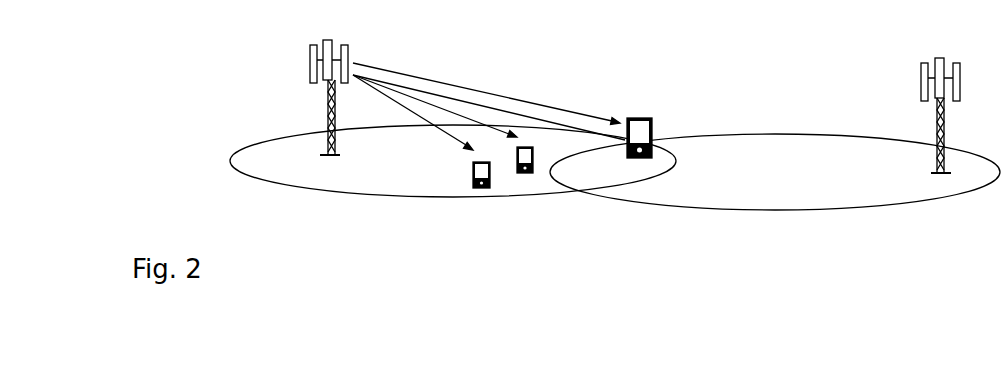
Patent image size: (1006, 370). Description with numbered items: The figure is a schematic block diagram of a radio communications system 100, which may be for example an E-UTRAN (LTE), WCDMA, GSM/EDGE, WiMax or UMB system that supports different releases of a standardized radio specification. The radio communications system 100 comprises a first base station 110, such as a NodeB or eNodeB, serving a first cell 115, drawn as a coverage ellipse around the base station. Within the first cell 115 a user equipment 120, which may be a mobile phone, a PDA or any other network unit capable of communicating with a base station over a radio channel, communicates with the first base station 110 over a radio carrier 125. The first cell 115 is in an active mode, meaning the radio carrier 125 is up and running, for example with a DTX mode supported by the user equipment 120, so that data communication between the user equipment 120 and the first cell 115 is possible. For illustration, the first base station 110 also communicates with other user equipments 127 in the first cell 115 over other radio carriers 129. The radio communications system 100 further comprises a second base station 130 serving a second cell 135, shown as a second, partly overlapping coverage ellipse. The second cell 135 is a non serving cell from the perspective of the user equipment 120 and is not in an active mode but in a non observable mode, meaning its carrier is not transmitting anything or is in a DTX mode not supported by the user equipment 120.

The radio communications system 100 is at (551, 262).
The first base station 110 is at (311, 28).
The first cell 115 is at (257, 172).
The user equipment 120 is at (640, 117).
The radio carrier 125 is at (453, 86).
The other user equipments 127 is at (475, 173).
The other radio carriers 129 is at (410, 120).
The second base station 130 is at (918, 67).
The second cell 135 is at (861, 208).